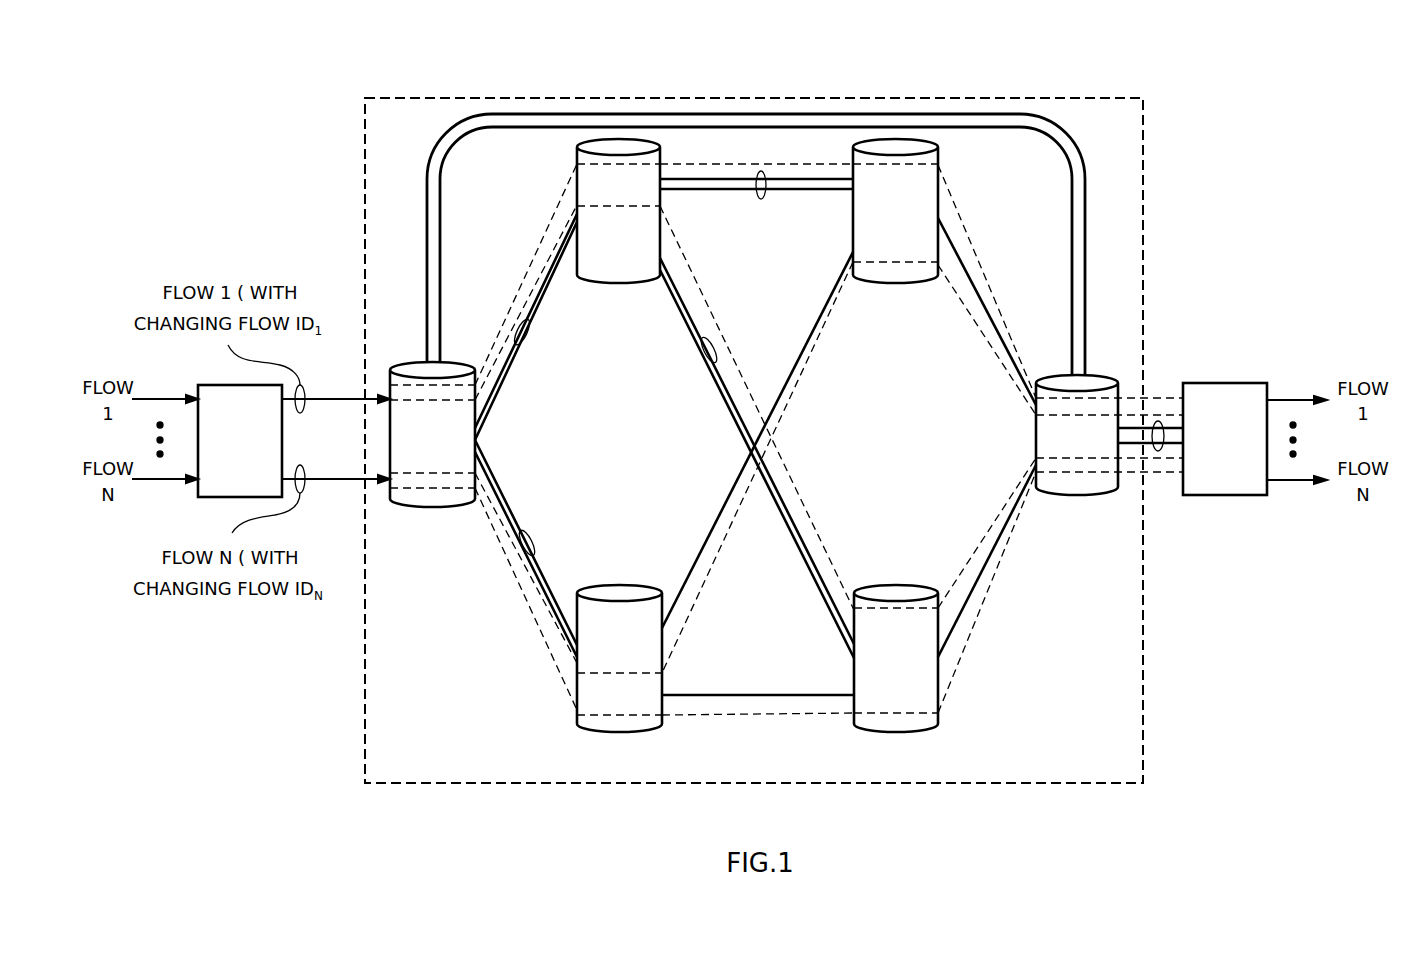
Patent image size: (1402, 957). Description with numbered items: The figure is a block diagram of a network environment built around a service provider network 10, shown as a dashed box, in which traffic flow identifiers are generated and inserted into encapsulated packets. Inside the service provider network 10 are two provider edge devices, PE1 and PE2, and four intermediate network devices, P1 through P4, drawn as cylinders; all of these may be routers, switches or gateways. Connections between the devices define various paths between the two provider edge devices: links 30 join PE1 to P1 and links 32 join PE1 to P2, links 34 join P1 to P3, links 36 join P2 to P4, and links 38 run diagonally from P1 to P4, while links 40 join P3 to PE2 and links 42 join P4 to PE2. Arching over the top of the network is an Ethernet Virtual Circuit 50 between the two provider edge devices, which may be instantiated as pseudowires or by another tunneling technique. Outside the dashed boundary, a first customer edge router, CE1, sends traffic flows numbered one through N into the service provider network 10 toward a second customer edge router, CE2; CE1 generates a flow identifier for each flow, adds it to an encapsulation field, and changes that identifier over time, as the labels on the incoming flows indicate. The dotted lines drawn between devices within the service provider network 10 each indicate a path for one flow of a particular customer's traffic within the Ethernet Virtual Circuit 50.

The service provider network 10 is at (1033, 98).
The links 30 is at (530, 338).
The links 32 is at (534, 538).
The links 34 is at (761, 199).
The links 36 is at (755, 695).
The links 38 is at (704, 355).
The links 40 is at (985, 312).
The links 42 is at (985, 562).
The Ethernet Virtual Circuit 50 is at (427, 246).